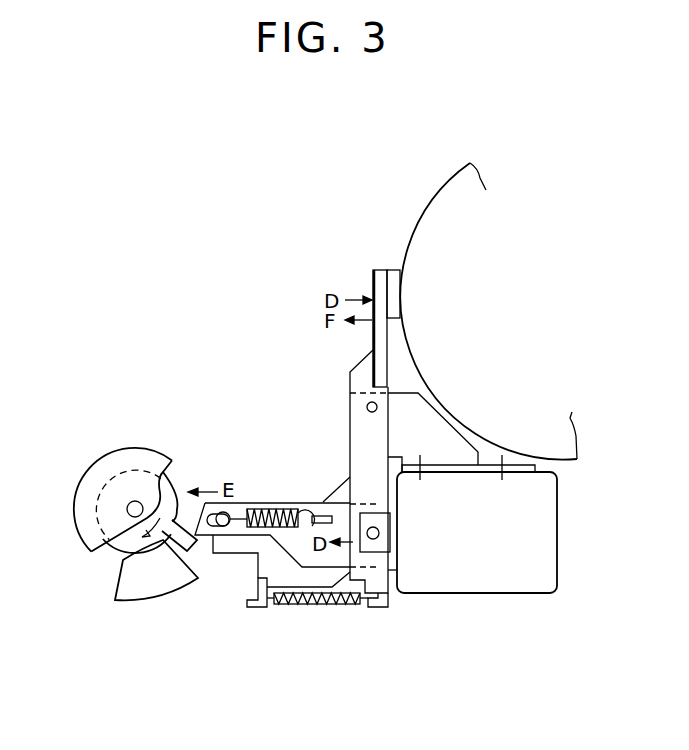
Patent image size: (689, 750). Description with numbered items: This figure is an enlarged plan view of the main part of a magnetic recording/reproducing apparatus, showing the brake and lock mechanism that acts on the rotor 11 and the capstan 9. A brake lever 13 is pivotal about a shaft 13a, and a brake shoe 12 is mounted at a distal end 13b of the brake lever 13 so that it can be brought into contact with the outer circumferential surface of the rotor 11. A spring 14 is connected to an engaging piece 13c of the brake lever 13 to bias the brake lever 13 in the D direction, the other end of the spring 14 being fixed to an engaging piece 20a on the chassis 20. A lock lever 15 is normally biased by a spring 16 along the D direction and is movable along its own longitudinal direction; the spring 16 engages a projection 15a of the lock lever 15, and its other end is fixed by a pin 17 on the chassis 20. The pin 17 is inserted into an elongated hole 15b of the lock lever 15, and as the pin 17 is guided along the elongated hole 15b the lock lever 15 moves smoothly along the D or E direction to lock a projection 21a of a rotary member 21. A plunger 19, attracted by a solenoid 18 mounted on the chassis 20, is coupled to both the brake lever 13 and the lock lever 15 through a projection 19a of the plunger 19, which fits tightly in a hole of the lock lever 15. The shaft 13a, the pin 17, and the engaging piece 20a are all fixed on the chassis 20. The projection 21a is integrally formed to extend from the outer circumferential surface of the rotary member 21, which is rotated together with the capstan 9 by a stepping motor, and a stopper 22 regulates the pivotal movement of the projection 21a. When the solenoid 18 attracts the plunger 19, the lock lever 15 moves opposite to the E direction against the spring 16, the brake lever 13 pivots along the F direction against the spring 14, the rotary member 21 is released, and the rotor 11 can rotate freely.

The capstan 9 is at (87, 475).
The rotor 11 is at (430, 200).
The brake shoe 12 is at (392, 268).
The brake lever 13 is at (360, 430).
The shaft 13a is at (367, 404).
The distal end of brake lever 13b is at (373, 280).
The engaging piece 13c is at (383, 607).
The spring 14 is at (315, 607).
The lock lever 15 is at (235, 537).
The projection of lock lever 15a is at (322, 514).
The elongated hole 15b is at (212, 513).
The spring 16 is at (279, 505).
The pin 17 is at (228, 510).
The solenoid 18 is at (468, 593).
The plunger 19 is at (390, 523).
The projection of plunger 19a is at (379, 536).
The chassis 20 is at (457, 447).
The engaging piece 20a is at (260, 608).
The rotary member 21 is at (177, 492).
The projection 21a is at (193, 547).
The stopper 22 is at (137, 605).